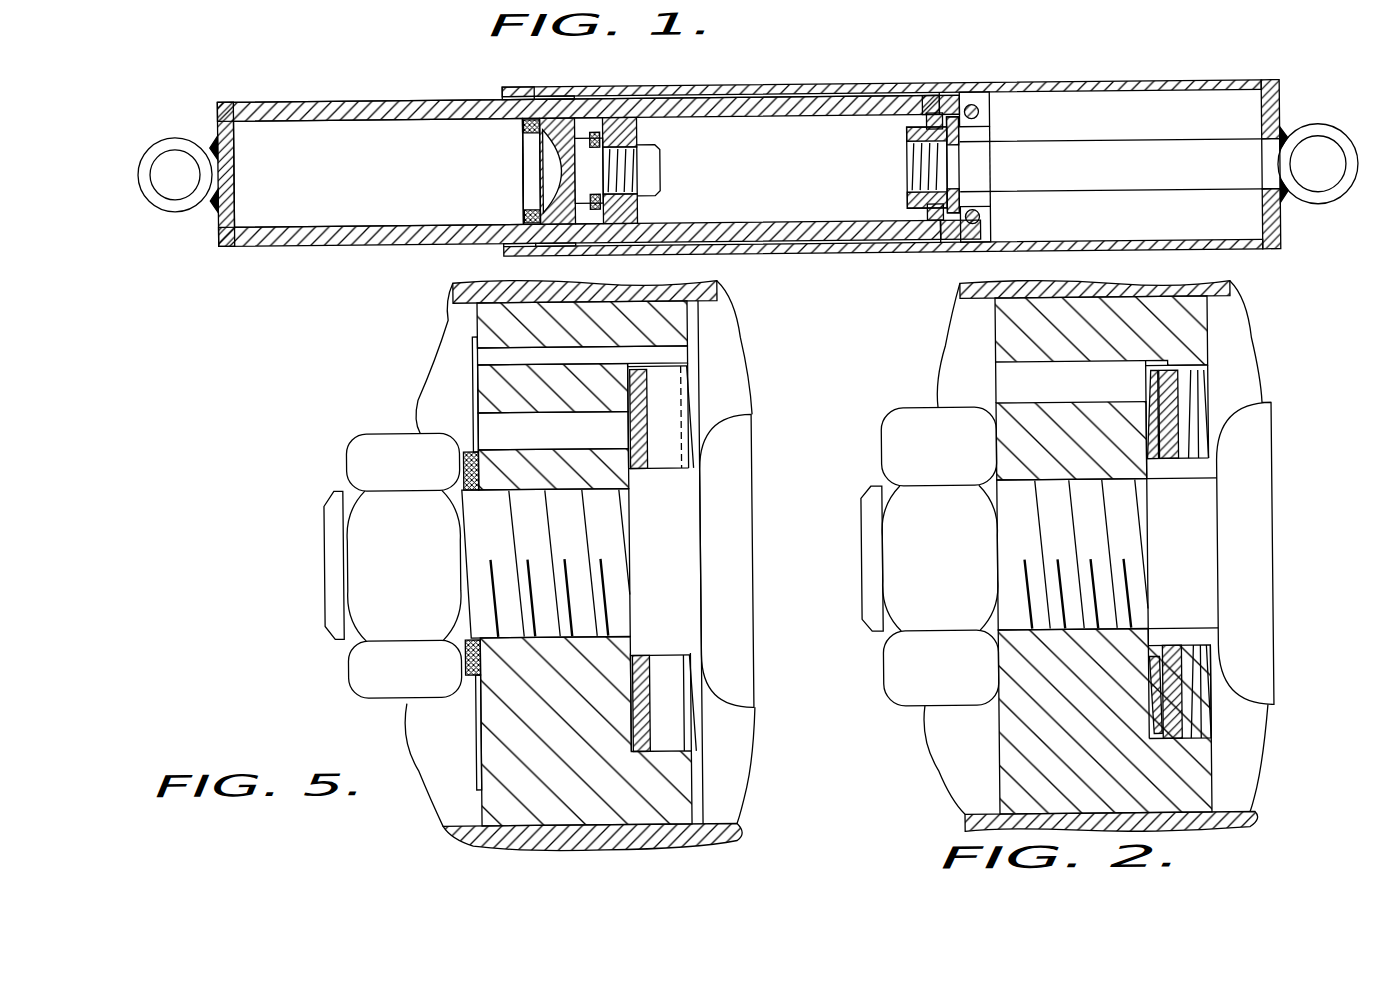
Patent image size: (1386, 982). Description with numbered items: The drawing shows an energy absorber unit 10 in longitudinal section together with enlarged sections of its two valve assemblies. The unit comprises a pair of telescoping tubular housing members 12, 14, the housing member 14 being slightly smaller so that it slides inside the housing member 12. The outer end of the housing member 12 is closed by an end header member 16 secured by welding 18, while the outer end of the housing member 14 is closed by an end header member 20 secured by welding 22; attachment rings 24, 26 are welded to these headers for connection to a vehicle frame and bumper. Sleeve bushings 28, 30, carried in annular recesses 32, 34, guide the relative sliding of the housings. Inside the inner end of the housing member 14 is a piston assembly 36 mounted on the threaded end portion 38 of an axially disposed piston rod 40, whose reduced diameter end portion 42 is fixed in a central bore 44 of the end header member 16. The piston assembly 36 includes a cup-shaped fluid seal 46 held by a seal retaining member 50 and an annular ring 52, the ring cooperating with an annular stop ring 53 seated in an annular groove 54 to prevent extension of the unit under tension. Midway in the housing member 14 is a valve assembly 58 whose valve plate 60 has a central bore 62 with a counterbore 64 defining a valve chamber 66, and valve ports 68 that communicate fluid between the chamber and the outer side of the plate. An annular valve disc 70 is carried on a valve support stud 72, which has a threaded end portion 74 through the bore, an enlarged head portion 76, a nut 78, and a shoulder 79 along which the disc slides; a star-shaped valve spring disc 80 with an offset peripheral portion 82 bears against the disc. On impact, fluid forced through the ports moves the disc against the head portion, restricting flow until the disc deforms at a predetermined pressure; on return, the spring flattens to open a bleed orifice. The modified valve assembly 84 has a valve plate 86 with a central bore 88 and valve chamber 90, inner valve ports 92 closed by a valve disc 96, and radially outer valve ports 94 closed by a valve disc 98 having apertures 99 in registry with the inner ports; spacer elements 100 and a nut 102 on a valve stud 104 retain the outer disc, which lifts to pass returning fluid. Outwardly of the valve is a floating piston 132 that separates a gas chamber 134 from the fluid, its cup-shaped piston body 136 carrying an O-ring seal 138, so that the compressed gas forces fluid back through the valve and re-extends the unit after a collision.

In FIG. 1, the energy absorber unit 10 is at (398, 264).
In FIG. 1, the tubular housing member 12 is at (882, 265).
In FIG. 1, the tubular housing member 14 is at (371, 89).
In FIG. 5, the tubular housing member 14 is at (458, 841).
In FIG. 2, the tubular housing member 14 is at (1223, 828).
In FIG. 1, the end header member 16 is at (1270, 118).
In FIG. 1, the welding 18 is at (1284, 244).
In FIG. 1, the end header member 20 is at (216, 218).
In FIG. 1, the welding 22 is at (222, 108).
In FIG. 1, the attachment ring 24 is at (1332, 136).
In FIG. 1, the attachment ring 26 is at (152, 207).
In FIG. 1, the sleeve bushing 28 is at (962, 252).
In FIG. 1, the sleeve bushing 30 is at (540, 252).
In FIG. 1, the annular recess 32 is at (942, 254).
In FIG. 1, the annular recess 34 is at (550, 252).
In FIG. 1, the piston assembly 36 is at (898, 156).
In FIG. 1, the threaded end portion 38 is at (906, 181).
In FIG. 1, the piston rod 40 is at (1136, 139).
In FIG. 1, the reduced diameter end portion 42 is at (1258, 163).
In FIG. 1, the central bore 44 is at (1258, 189).
In FIG. 1, the fluid seal 46 is at (935, 116).
In FIG. 1, the seal retaining member 50 is at (906, 131).
In FIG. 1, the annular ring 52 is at (953, 119).
In FIG. 1, the annular stop ring 53 is at (980, 222).
In FIG. 1, the annular groove 54 is at (976, 110).
In FIG. 1, the valve assembly 58 is at (575, 128).
In FIG. 2, the valve assembly 58 is at (915, 735).
In FIG. 1, the valve plate 60 is at (612, 232).
In FIG. 2, the valve plate 60 is at (992, 333).
In FIG. 2, the central bore 62 is at (1030, 645).
In FIG. 2, the counterbore 64 is at (1186, 742).
In FIG. 2, the valve chamber 66 is at (1190, 680).
In FIG. 2, the valve ports 68 is at (1018, 408).
In FIG. 1, the valve disc 70 is at (596, 131).
In FIG. 2, the valve disc 70 is at (1180, 410).
In FIG. 1, the valve support stud 72 is at (562, 178).
In FIG. 2, the valve support stud 72 is at (859, 505).
In FIG. 2, the threaded end portion 74 is at (1085, 492).
In FIG. 2, the head portion 76 is at (1262, 462).
In FIG. 1, the nut 78 is at (656, 152).
In FIG. 2, the nut 78 is at (893, 437).
In FIG. 2, the shoulder 79 is at (1200, 542).
In FIG. 2, the valve spring disc 80 is at (1150, 680).
In FIG. 2, the offset peripheral portion 82 is at (1158, 705).
In FIG. 5, the valve assembly 84 is at (348, 712).
In FIG. 5, the valve plate 86 is at (474, 809).
In FIG. 5, the central bore 88 is at (545, 641).
In FIG. 5, the valve chamber 90 is at (695, 378).
In FIG. 5, the valve ports 92 is at (553, 445).
In FIG. 5, the valve ports 94 is at (508, 368).
In FIG. 5, the valve disc 96 is at (627, 710).
In FIG. 5, the valve disc 98 is at (472, 376).
In FIG. 5, the apertures 99 is at (472, 412).
In FIG. 5, the spacer elements 100 is at (462, 680).
In FIG. 5, the nut 102 is at (365, 455).
In FIG. 5, the valve stud 104 is at (736, 596).
In FIG. 1, the floating piston 132 is at (520, 175).
In FIG. 1, the gas chamber 134 is at (352, 172).
In FIG. 1, the piston body 136 is at (540, 156).
In FIG. 1, the O-ring seal 138 is at (524, 126).